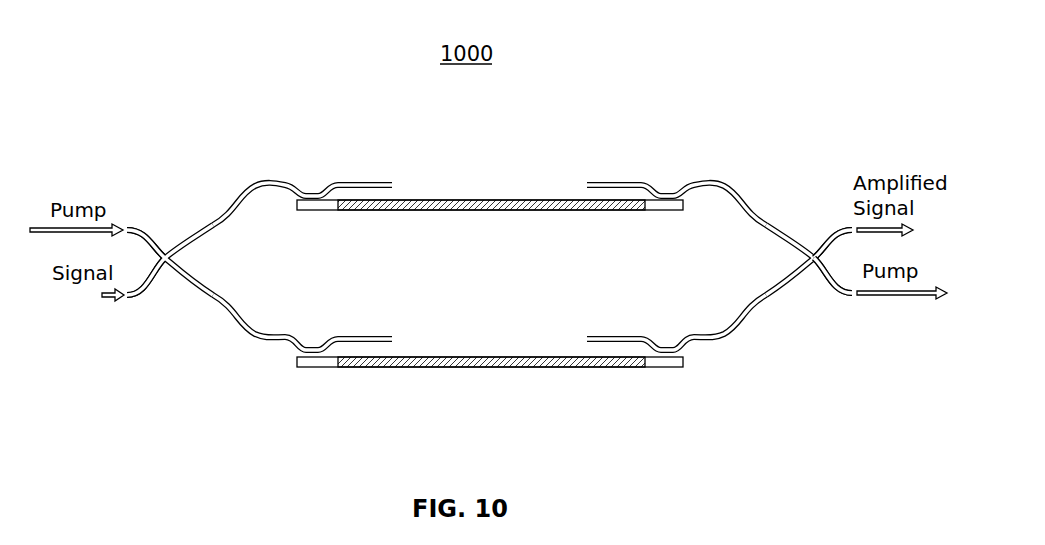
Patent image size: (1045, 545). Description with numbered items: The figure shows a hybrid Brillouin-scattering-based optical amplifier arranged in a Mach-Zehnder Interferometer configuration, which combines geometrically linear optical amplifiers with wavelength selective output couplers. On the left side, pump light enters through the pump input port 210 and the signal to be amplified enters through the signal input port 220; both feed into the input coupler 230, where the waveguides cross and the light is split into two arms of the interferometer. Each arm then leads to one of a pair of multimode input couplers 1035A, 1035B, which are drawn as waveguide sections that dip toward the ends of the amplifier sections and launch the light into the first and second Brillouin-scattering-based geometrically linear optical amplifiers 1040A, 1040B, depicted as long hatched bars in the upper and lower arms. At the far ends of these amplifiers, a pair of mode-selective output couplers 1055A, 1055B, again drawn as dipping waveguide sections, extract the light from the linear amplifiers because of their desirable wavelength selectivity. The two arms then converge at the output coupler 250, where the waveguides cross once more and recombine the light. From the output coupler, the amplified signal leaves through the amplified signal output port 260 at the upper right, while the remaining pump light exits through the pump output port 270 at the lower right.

The pump input port 210 is at (147, 209).
The signal input port 220 is at (152, 310).
The input coupler 230 is at (171, 240).
The multimode input coupler 1035A is at (307, 182).
The multimode input coupler 1035B is at (309, 337).
The first Brillouin-scattering-based geometrically linear optical amplifier 1040A is at (478, 187).
The second Brillouin-scattering-based geometrically linear optical amplifier 1040B is at (478, 380).
The mode-selective output coupler 1055A is at (678, 179).
The mode-selective output coupler 1055B is at (715, 357).
The output coupler 250 is at (809, 240).
The amplified signal output port 260 is at (833, 208).
The pump output port 270 is at (822, 296).